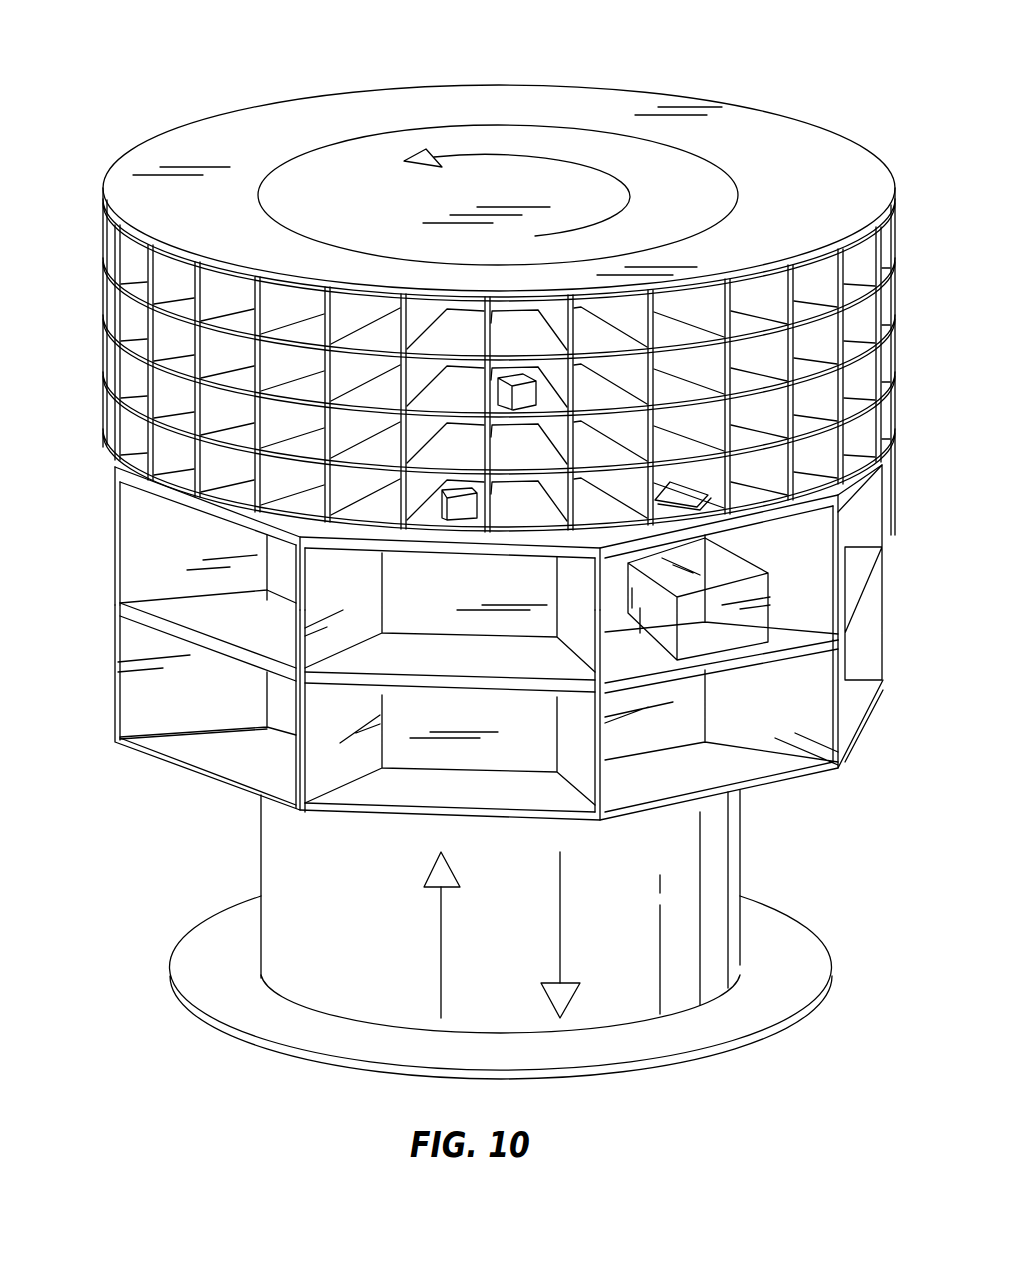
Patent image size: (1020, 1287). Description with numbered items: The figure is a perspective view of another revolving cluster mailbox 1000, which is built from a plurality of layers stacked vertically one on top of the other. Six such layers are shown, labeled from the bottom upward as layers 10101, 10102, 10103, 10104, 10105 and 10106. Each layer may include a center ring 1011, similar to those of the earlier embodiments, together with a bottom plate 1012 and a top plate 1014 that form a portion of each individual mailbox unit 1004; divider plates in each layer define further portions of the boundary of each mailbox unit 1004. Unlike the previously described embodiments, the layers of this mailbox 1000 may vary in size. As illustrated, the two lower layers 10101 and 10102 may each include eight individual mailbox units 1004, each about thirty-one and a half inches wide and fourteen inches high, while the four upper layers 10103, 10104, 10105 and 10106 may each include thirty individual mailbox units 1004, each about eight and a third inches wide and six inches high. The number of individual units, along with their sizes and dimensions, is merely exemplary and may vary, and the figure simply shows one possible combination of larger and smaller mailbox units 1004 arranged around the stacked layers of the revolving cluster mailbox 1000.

The revolving cluster mailbox 1000 is at (465, 545).
The layer 10106 is at (90, 226).
The layer 10105 is at (90, 286).
The layer 10104 is at (90, 346).
The layer 10103 is at (90, 403).
The layer 10102 is at (96, 545).
The layer 10101 is at (96, 669).
The mailbox unit 1004 is at (178, 727).
The center ring 1011 is at (278, 713).
The bottom plate 1012 is at (735, 660).
The top plate 1014 is at (745, 784).